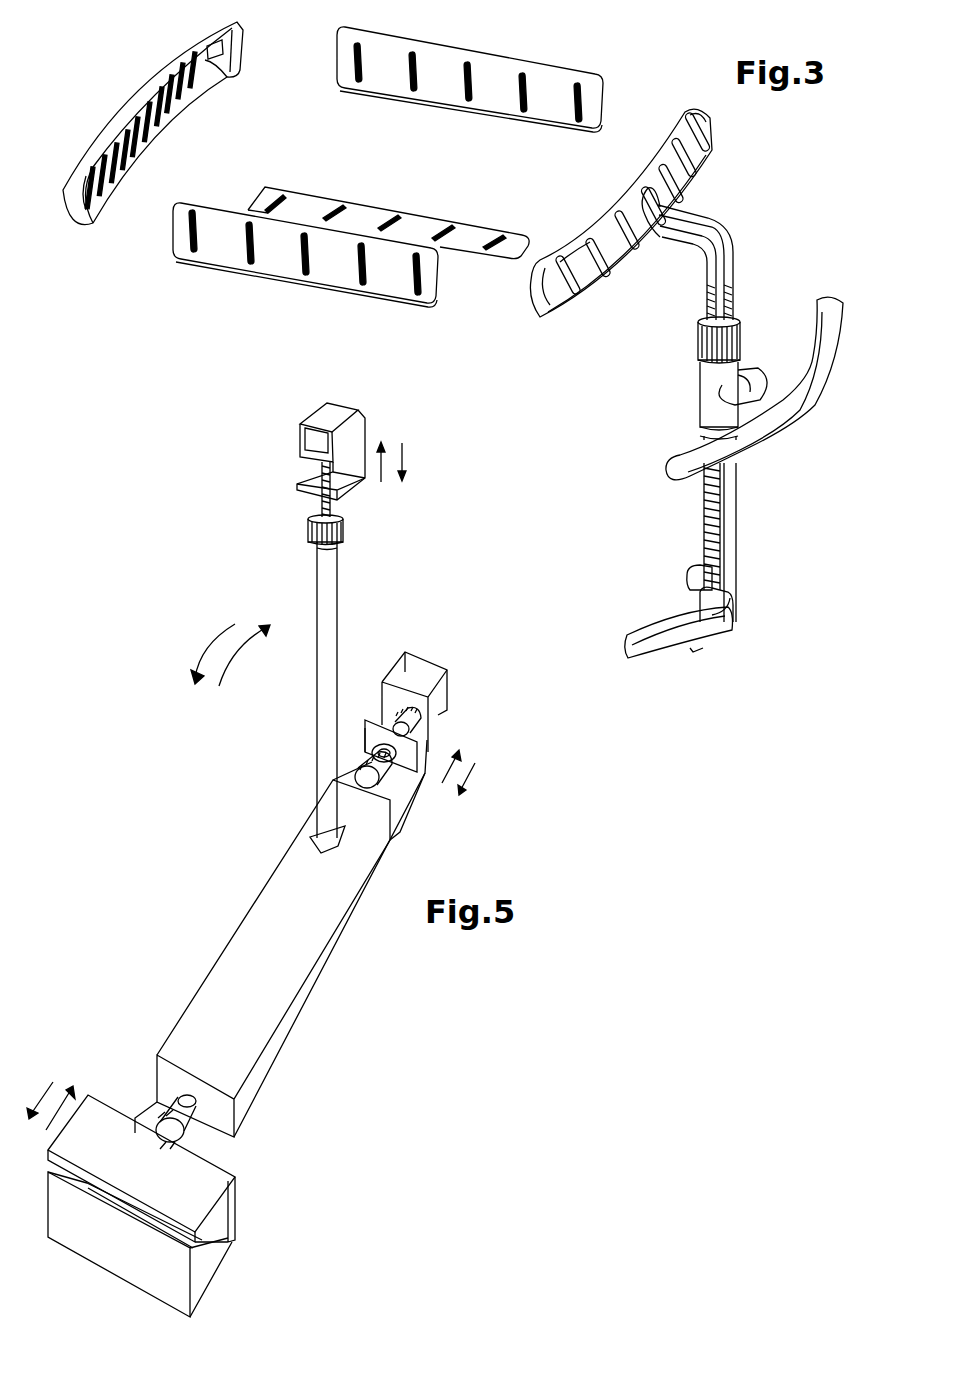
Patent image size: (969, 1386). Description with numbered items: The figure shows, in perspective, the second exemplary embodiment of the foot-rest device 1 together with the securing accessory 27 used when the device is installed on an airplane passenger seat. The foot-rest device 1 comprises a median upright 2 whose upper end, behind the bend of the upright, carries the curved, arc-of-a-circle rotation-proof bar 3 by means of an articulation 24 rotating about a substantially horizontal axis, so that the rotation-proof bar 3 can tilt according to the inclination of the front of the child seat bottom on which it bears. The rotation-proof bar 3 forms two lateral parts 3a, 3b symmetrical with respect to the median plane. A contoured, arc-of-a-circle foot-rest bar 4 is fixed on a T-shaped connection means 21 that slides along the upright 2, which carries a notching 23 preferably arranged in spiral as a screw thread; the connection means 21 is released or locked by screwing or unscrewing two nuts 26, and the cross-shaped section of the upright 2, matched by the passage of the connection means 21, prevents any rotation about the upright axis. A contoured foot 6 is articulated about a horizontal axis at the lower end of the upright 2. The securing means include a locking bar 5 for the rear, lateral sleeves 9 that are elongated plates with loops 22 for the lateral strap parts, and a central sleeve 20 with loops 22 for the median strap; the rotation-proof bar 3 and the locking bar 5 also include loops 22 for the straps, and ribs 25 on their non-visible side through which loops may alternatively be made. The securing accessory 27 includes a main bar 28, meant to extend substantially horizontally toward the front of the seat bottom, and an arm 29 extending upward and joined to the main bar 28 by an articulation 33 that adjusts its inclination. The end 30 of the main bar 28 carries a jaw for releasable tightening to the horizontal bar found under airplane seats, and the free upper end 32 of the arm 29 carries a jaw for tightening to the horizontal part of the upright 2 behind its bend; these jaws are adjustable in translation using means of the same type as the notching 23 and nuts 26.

In FIG. 3, the foot-rest device 1 is at (133, 298).
In FIG. 3, the median upright 2 is at (740, 237).
In FIG. 3, the rotation-proof bar 3 is at (657, 133).
In FIG. 3, the lateral part of the rotation-proof bar 3a is at (547, 292).
In FIG. 3, the lateral part of the rotation-proof bar 3b is at (710, 113).
In FIG. 3, the foot-rest bar 4 is at (834, 288).
In FIG. 3, the locking bar 5 is at (150, 55).
In FIG. 3, the foot 6 is at (708, 653).
In FIG. 3, the lateral sleeve 9 is at (506, 44).
In FIG. 3, the central sleeve 20 is at (430, 210).
In FIG. 3, the T-shaped connection means 21 is at (695, 379).
In FIG. 3, the loop 22 is at (202, 87).
In FIG. 3, the notching 23 is at (745, 496).
In FIG. 3, the articulation 24 is at (670, 175).
In FIG. 3, the rib 25 is at (103, 183).
In FIG. 3, the nut 26 is at (745, 335).
In FIG. 5, the securing accessory 27 is at (255, 763).
In FIG. 5, the main bar 28 is at (273, 977).
In FIG. 5, the arm 29 is at (322, 678).
In FIG. 5, the end of the main bar 30 is at (238, 1284).
In FIG. 5, the free/upper end of the arm 32 is at (285, 433).
In FIG. 5, the articulation 33 is at (310, 827).